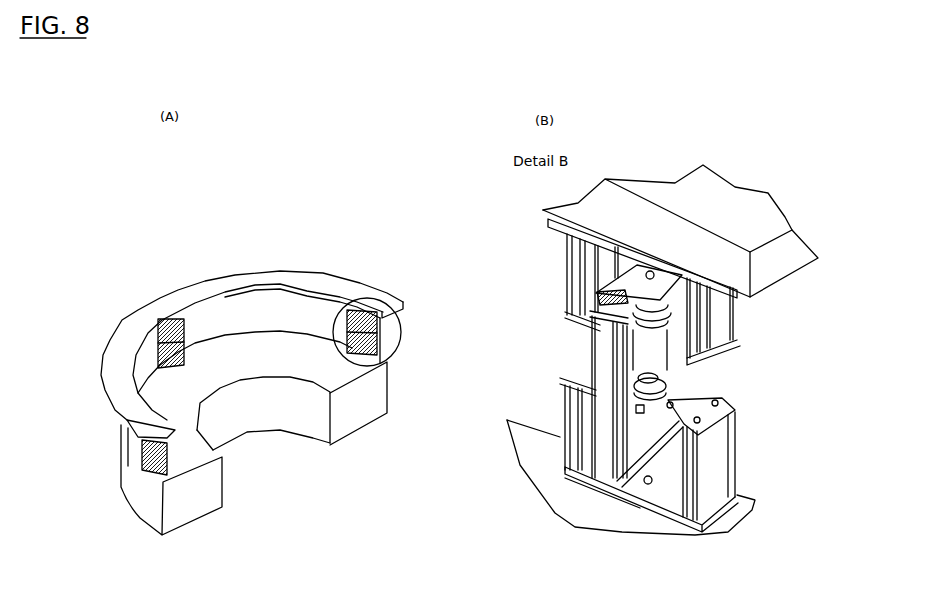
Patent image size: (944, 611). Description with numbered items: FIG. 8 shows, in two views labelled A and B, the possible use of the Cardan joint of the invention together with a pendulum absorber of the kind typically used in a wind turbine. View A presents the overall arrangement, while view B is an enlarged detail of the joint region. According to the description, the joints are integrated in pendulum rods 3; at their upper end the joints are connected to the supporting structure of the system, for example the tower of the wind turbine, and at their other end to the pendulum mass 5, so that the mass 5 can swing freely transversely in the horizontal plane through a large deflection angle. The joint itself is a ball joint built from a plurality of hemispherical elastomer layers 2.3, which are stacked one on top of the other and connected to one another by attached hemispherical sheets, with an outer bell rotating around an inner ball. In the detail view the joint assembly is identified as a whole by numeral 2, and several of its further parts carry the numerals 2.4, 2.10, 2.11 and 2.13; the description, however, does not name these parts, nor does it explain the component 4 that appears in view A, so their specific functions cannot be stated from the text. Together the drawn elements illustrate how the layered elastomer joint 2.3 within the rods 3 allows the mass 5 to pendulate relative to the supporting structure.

The drive/sensor unit 2 is at (716, 410).
The hemispherical elastomer layers 2.3 is at (672, 324).
The holder bracket 2.4 is at (662, 317).
The upper guide columns 2.10 is at (590, 320).
The base plate 2.11 is at (655, 505).
The lower guide columns 2.13 is at (573, 437).
The pendulum rods 3 is at (383, 357).
The ring 4 is at (243, 273).
The pendulum mass 5 is at (248, 410).